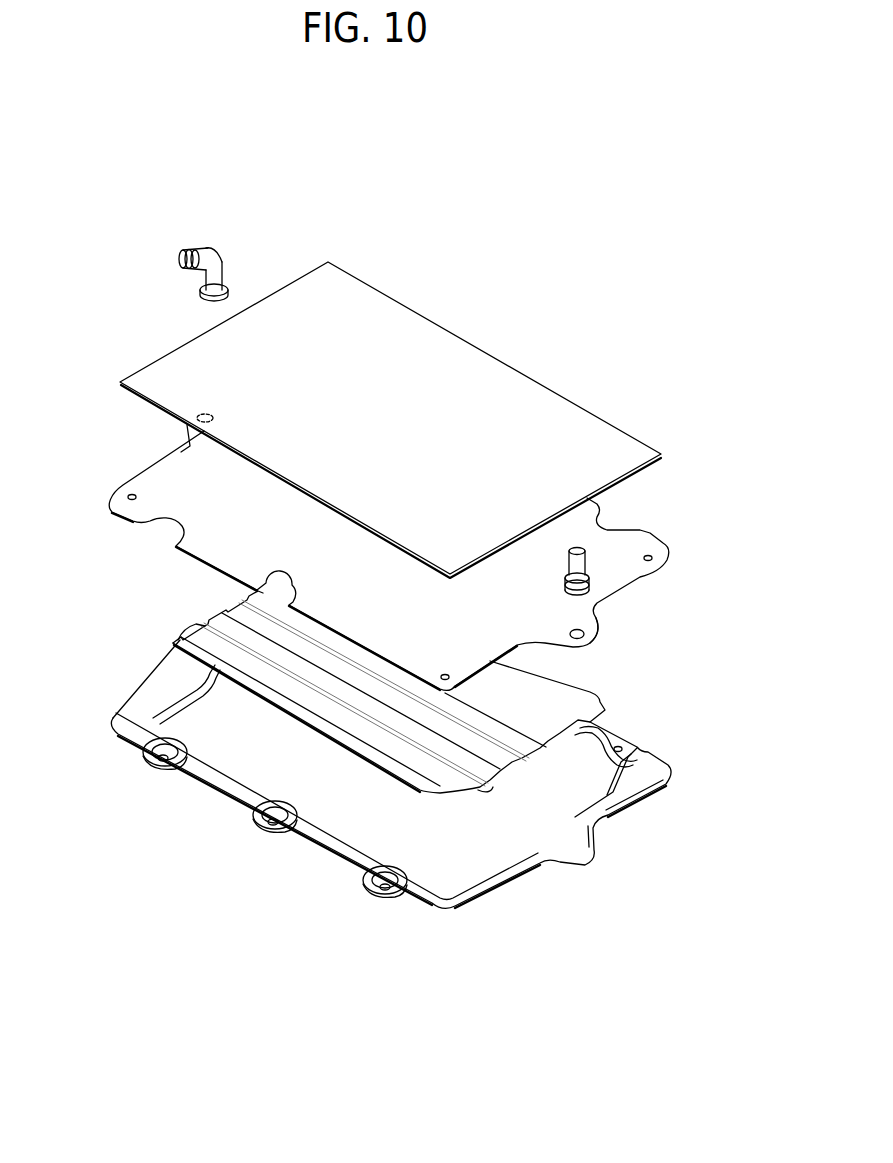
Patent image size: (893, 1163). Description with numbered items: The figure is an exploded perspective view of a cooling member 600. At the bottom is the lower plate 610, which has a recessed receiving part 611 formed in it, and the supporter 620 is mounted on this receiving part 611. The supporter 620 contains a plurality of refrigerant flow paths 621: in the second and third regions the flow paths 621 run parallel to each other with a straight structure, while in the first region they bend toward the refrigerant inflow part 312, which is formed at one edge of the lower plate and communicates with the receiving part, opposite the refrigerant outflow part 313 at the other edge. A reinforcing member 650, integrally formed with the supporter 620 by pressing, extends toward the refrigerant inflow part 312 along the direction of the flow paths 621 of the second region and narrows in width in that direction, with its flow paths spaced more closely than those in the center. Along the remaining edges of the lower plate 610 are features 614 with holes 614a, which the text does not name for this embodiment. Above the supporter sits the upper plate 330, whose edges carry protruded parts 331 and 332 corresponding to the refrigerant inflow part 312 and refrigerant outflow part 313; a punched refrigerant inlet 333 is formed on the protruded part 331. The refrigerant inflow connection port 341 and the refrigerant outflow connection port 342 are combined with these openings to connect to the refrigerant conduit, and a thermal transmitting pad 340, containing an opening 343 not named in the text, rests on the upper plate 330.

The cooling member 600 is at (99, 150).
The thermal transmitting pad 340 is at (503, 343).
The refrigerant inflow connection port 341 is at (580, 563).
The refrigerant outflow connection port 342 is at (207, 253).
The hole 343 is at (203, 418).
The upper plate 330 is at (657, 527).
The protruded part corresponding to the refrigerant inflow part 331 is at (598, 643).
The protruded part corresponding to the refrigerant outflow part 332 is at (188, 426).
The refrigerant inlet 333 is at (581, 632).
The refrigerant outflow part 313 is at (192, 632).
The refrigerant inflow part 312 is at (597, 857).
The lower plate 610 is at (530, 877).
The receiving part 611 is at (370, 827).
The mounting boss 614 is at (253, 810).
The mounting hole 614a is at (263, 825).
The supporter 620 is at (313, 703).
The refrigerant flow paths 621 is at (493, 787).
The reinforcing member 650 is at (520, 750).